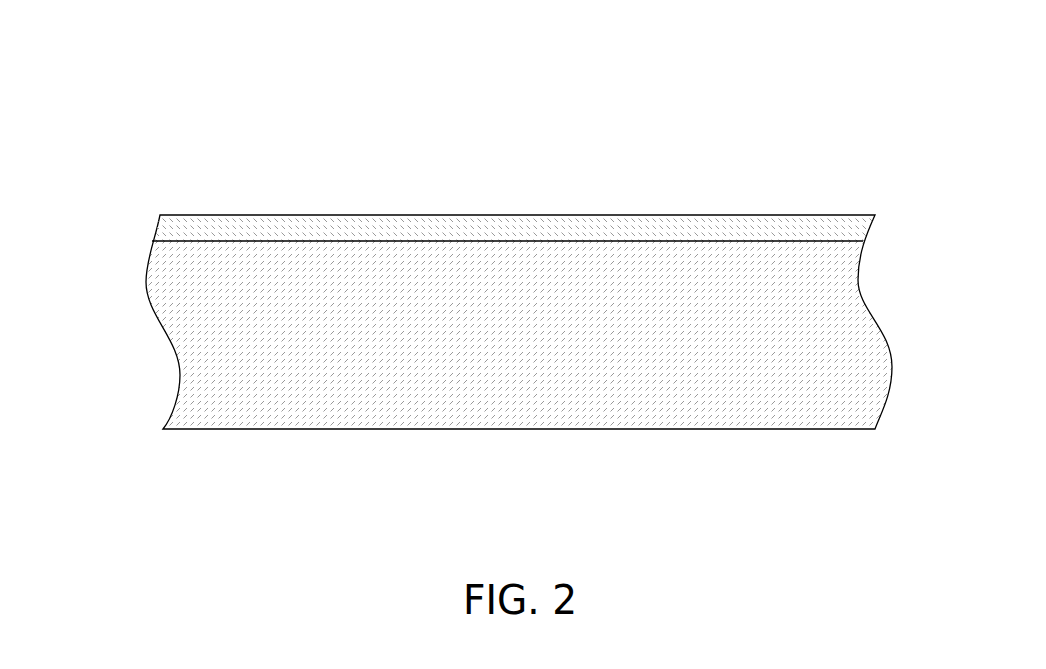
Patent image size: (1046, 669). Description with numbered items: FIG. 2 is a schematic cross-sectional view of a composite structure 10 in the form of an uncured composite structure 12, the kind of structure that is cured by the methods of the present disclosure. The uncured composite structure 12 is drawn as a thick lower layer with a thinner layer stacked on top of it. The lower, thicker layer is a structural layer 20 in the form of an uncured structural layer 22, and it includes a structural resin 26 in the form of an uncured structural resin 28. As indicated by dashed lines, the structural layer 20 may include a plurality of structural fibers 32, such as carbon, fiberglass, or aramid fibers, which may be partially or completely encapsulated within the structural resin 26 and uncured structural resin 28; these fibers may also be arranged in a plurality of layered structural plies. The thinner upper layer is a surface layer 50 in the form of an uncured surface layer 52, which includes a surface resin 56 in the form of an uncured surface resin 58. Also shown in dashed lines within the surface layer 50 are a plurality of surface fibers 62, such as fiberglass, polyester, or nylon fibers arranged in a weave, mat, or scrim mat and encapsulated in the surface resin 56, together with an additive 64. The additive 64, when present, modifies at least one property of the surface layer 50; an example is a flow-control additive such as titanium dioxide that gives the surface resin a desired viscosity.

The composite structure 10 is at (126, 55).
The uncured composite structure 12 is at (146, 103).
The structural layer 20 is at (153, 320).
The uncured structural layer 22 is at (178, 353).
The structural resin 26 is at (198, 388).
The uncured structural resin 28 is at (170, 408).
The plurality of structural fibers 32 is at (140, 262).
The surface layer 50 is at (155, 221).
The uncured surface layer 52 is at (157, 227).
The surface resin 56 is at (224, 228).
The uncured surface resin 58 is at (301, 229).
The plurality of surface fibers 62 is at (392, 227).
The additive 64 is at (467, 227).